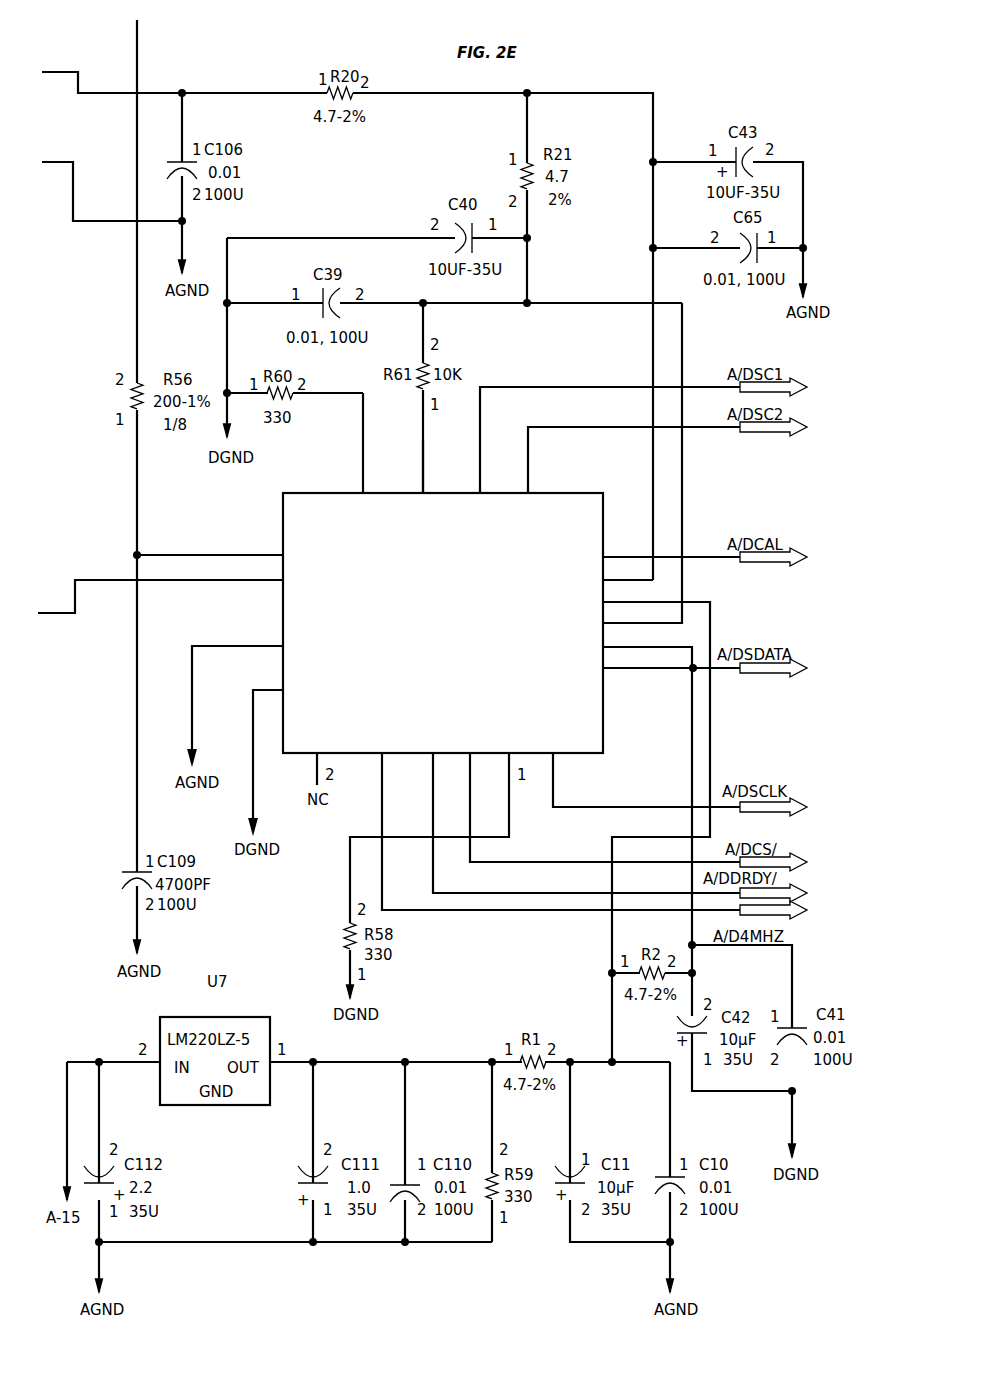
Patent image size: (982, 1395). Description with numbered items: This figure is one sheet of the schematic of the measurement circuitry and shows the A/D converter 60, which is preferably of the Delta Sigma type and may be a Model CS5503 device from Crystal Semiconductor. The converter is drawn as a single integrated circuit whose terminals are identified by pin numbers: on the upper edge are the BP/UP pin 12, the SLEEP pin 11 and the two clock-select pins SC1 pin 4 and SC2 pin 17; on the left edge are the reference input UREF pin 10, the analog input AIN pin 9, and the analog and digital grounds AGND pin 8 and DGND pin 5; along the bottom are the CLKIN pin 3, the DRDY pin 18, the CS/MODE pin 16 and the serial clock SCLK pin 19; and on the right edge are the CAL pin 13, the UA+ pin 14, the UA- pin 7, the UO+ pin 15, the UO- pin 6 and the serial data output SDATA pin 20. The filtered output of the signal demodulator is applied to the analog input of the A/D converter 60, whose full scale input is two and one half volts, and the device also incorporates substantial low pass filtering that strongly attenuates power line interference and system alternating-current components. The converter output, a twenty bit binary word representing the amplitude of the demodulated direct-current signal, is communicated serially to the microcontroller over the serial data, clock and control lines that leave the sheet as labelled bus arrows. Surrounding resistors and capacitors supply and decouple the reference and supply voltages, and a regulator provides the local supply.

The A/D converter 60 is at (283, 513).
The CLKIN pin 3 is at (561, 831).
The SC1 pin 4 is at (610, 440).
The DGND pin 5 is at (267, 751).
The UO- pin 6 is at (647, 800).
The UA- pin 7 is at (656, 822).
The AGND pin 8 is at (236, 696).
The AIN pin 9 is at (160, 588).
The UREF pin 10 is at (210, 545).
The SLEEP pin 11 is at (436, 466).
The BP/UP pin 12 is at (376, 443).
The CAL pin 13 is at (671, 547).
The UA+ pin 14 is at (628, 570).
The UO+ pin 15 is at (642, 463).
The CS/MODE pin 16 is at (605, 807).
The SC2 pin 17 is at (634, 460).
The DRDY pin 18 is at (586, 823).
The SCLK pin 19 is at (646, 780).
The SDATA pin 20 is at (671, 658).